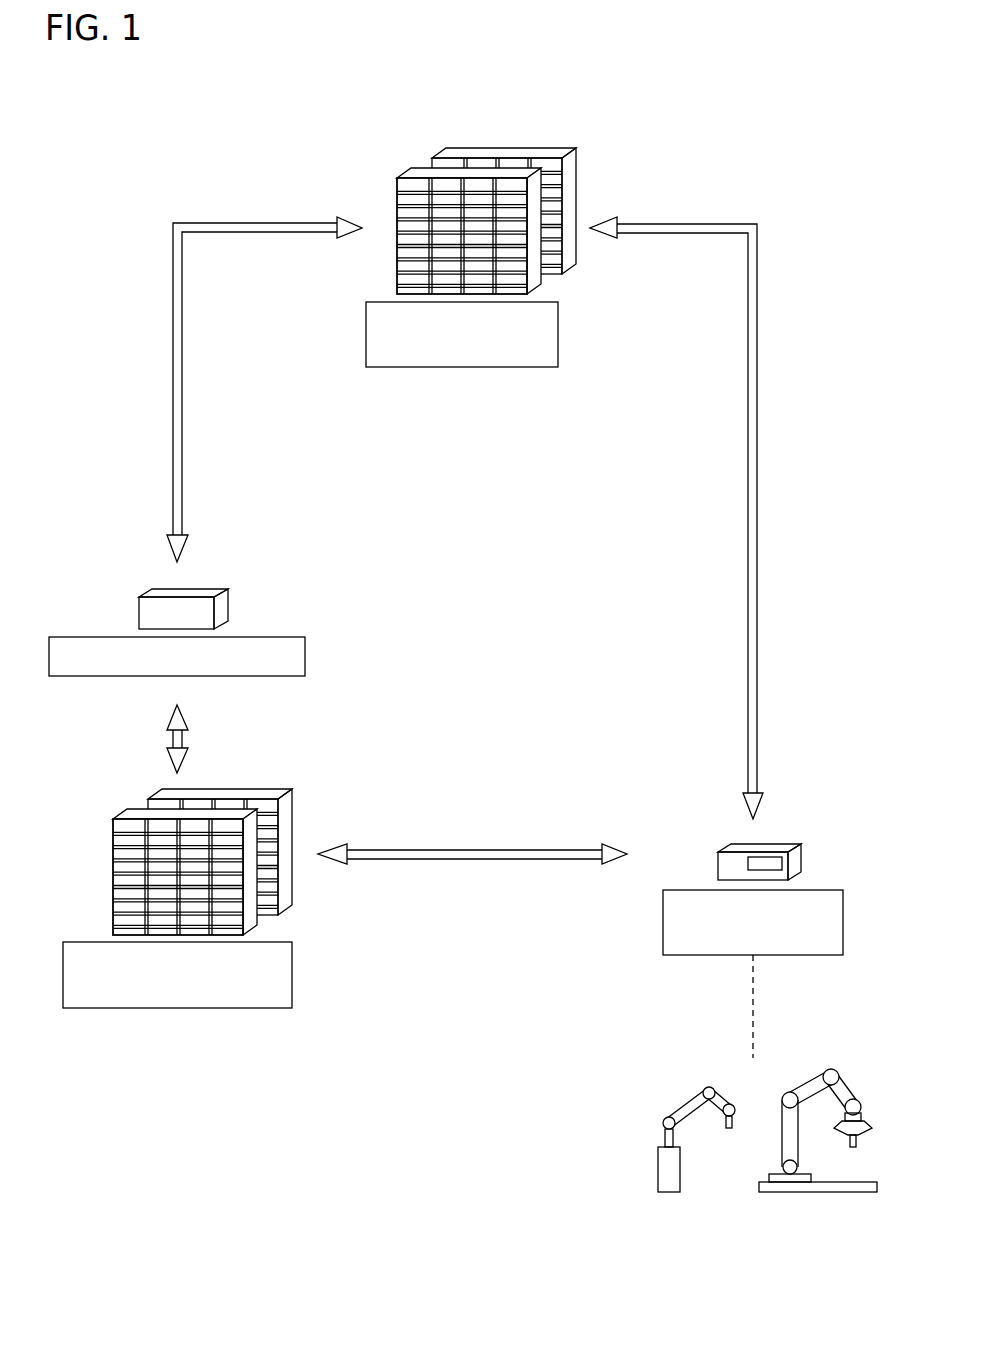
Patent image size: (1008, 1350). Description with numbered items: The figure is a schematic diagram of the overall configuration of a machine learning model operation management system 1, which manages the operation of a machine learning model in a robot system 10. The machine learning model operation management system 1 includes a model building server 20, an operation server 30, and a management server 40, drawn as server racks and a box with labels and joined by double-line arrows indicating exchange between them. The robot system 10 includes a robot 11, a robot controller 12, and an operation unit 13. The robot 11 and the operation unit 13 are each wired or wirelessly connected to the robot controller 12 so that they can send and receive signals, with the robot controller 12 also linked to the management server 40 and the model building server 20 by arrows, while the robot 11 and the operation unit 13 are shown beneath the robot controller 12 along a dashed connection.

The machine learning model operation management system 1 is at (140, 1218).
The robot system 10 is at (628, 1183).
The robot 11 is at (792, 1132).
The robot controller 12 is at (730, 867).
The operation unit 13 is at (693, 1113).
The model building server 20 is at (288, 883).
The operation server 30 is at (224, 600).
The management server 40 is at (573, 243).